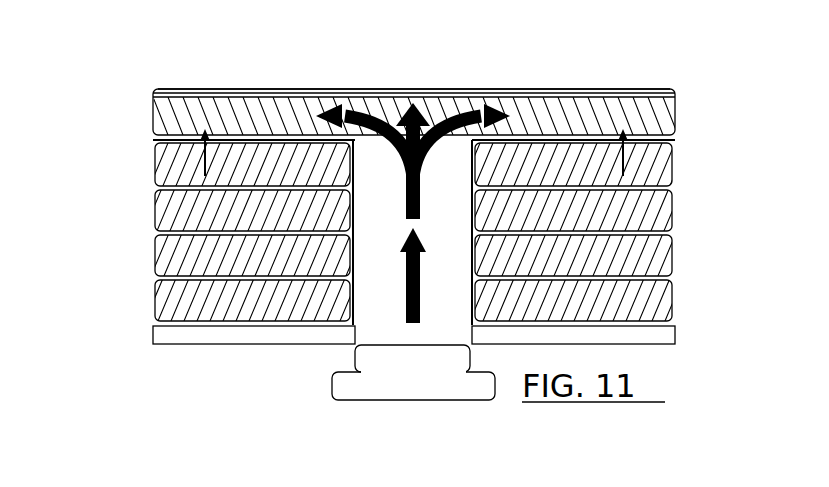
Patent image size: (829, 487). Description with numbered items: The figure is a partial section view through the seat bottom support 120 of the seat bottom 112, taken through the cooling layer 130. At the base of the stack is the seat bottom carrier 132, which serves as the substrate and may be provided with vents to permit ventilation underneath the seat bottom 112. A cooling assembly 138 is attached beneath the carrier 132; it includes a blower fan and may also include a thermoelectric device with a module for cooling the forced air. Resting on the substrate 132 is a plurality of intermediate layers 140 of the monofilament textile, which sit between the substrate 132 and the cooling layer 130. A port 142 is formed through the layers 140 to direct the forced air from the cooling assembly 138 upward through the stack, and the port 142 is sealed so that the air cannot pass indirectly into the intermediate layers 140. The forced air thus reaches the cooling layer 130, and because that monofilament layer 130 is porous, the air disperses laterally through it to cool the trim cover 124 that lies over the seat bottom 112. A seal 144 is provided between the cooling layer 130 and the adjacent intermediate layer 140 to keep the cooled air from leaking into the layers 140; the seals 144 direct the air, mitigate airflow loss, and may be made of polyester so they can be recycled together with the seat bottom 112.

The seat bottom 112 is at (549, 70).
The seat bottom support 120 is at (115, 109).
The trim cover 124 is at (626, 88).
The cooling layer 130 is at (176, 118).
The seat bottom carrier 132 is at (190, 352).
The cooling assembly 138 is at (345, 386).
The layers 140 is at (156, 262).
The port 142 is at (383, 177).
The seal 144 is at (152, 142).